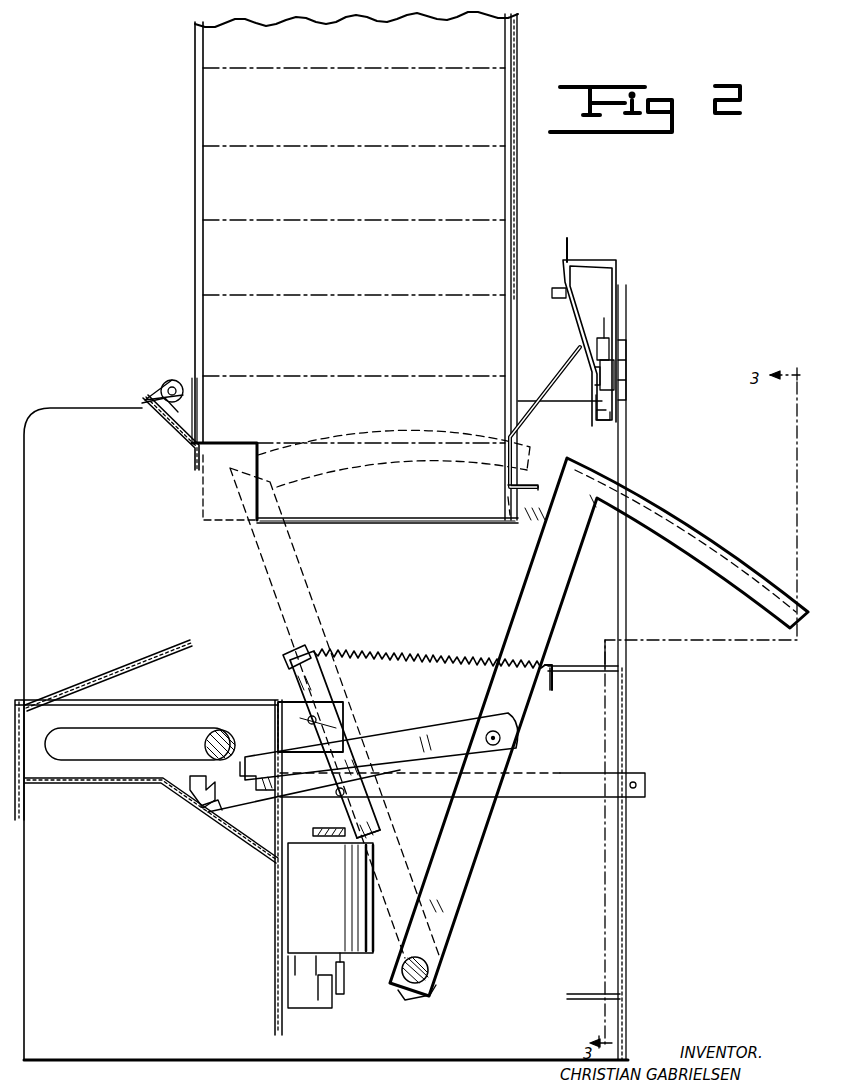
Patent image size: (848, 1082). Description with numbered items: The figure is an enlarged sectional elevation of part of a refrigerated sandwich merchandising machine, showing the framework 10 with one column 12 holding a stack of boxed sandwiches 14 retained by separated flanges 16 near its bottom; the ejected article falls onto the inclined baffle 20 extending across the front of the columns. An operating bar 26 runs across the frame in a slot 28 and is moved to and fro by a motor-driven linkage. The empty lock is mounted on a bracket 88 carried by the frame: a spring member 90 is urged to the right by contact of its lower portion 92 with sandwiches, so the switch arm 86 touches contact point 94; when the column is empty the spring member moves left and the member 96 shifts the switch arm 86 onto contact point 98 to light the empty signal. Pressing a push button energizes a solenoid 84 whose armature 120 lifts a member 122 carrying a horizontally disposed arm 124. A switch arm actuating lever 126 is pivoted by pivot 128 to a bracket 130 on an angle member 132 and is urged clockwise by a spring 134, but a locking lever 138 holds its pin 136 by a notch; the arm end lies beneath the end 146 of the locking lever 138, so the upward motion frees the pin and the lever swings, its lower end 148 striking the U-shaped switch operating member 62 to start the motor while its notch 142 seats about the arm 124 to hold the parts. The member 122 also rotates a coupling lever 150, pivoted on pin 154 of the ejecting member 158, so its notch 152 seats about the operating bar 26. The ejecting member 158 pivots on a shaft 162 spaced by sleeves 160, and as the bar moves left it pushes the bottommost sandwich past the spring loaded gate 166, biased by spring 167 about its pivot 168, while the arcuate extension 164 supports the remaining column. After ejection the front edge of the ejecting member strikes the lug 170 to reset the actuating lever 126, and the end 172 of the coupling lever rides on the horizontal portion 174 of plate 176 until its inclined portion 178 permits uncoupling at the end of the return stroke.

The framework 10 is at (626, 920).
The column 12 is at (353, 274).
The sandwich 14 is at (200, 48).
The flange 16 is at (415, 525).
The inclined baffle 20 is at (150, 662).
The operating bar 26 is at (226, 730).
The slot 28 is at (162, 732).
The switch operating member 62 is at (316, 840).
The solenoid 84 is at (368, 910).
The switch arm 86 is at (598, 390).
The bracket 88 is at (588, 262).
The spring member 90 is at (553, 372).
The lower portion 92 is at (505, 490).
The contact point 94 is at (604, 340).
The member 96 is at (599, 416).
The contact point 98 is at (624, 378).
The armature 120 is at (344, 978).
The member 122 is at (294, 966).
The horizontally disposed arm 124 is at (292, 808).
The switch arm actuating lever 126 is at (330, 731).
The pivot 128 is at (333, 714).
The bracket 130 is at (288, 698).
The angle member 132 is at (262, 700).
The spring 134 is at (430, 654).
The pin 136 is at (352, 795).
The locking lever 138 is at (520, 771).
The reentrant portion or notch 142 is at (348, 762).
The end of locking lever 146 is at (262, 786).
The lower end of actuating lever 148 is at (350, 822).
The coupling lever 150 is at (405, 730).
The notch 152 is at (214, 806).
The pin 154 is at (500, 740).
The ejecting member 158 is at (554, 632).
The sleeve 160 is at (430, 978).
The shaft 162 is at (413, 993).
The arcuate extension 164 is at (703, 515).
The spring loaded gate 166 is at (165, 445).
The spring 167 is at (146, 410).
The pivot 168 is at (172, 380).
The horizontally disposed lug 170 is at (315, 655).
The end of lever 172 is at (178, 782).
The horizontal portion 174 is at (88, 778).
The plate 176 is at (112, 785).
The inclined portion 178 is at (228, 830).